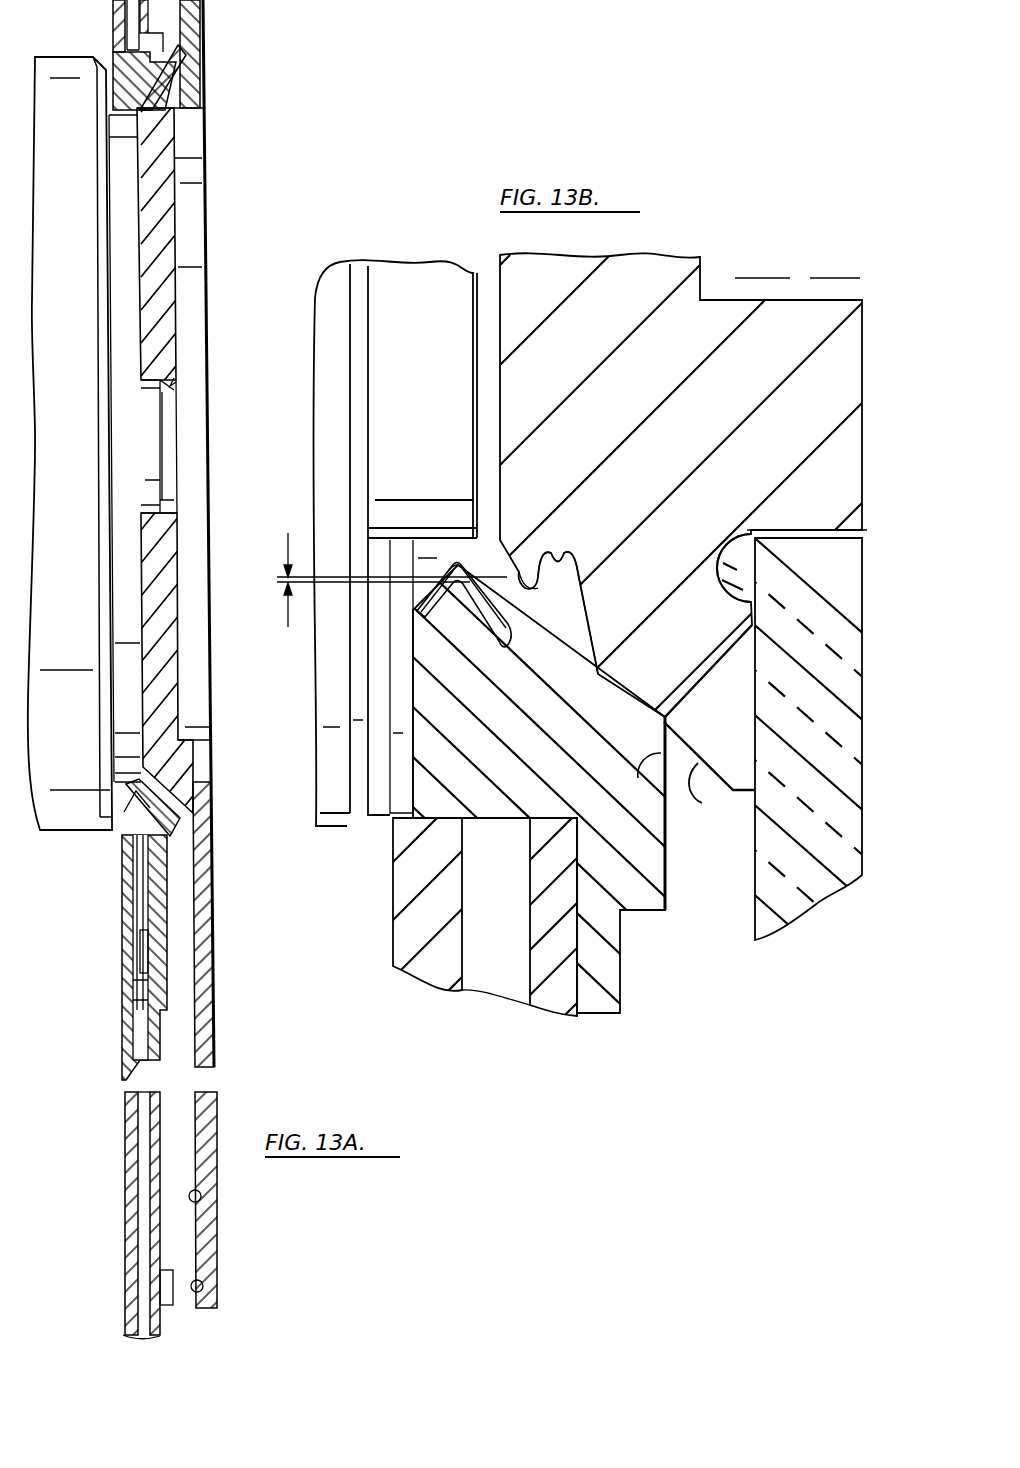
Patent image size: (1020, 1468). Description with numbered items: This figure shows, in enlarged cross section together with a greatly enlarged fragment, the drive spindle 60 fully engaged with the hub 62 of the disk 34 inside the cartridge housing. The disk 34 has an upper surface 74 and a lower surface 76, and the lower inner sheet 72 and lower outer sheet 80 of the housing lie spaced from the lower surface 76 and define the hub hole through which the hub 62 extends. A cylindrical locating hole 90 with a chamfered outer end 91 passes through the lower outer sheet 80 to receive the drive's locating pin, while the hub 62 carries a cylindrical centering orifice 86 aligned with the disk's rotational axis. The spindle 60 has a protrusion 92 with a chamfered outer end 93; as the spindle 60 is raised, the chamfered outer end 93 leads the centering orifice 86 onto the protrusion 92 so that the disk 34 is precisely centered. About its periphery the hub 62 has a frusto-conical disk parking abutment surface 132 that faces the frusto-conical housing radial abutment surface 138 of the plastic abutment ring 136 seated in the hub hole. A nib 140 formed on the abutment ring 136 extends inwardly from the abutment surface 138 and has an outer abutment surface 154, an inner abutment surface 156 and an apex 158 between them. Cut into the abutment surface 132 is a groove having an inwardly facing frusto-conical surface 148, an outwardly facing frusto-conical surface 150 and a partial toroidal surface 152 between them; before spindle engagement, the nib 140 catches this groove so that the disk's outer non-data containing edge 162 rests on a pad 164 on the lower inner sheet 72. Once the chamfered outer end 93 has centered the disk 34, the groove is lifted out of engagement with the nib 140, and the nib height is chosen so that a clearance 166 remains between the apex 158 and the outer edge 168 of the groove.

In FIG. 13A, the disk 34 is at (232, 1038).
In FIG. 13B, the disk 34 is at (812, 913).
In FIG. 13A, the spindle 60 is at (118, 316).
In FIG. 13B, the spindle 60 is at (377, 300).
In FIG. 13A, the hub 62 is at (171, 574).
In FIG. 13B, the hub 62 is at (677, 260).
In FIG. 13A, the lower inner sheet 72 is at (148, 1231).
In FIG. 13B, the lower inner sheet 72 is at (548, 1003).
In FIG. 13A, the upper surface of the disk 74 is at (218, 1062).
In FIG. 13A, the lower surface of the disk 76 is at (200, 1195).
In FIG. 13A, the lower outer sheet 80 is at (123, 1063).
In FIG. 13B, the lower outer sheet 80 is at (424, 960).
In FIG. 13A, the cylindrical centering orifice 86 is at (172, 385).
In FIG. 13A, the cylindrical locating hole 90 is at (142, 945).
In FIG. 13A, the chamfered outer end 91 is at (137, 981).
In FIG. 13A, the protrusion 92 is at (156, 470).
In FIG. 13A, the chamfered outer end 93 is at (172, 435).
In FIG. 13A, the frusto-conical disk parking abutment surface 132 is at (172, 62).
In FIG. 13B, the frusto-conical disk parking abutment surface 132 is at (695, 768).
In FIG. 13A, the plastic abutment ring 136 is at (178, 42).
In FIG. 13B, the plastic abutment ring 136 is at (440, 762).
In FIG. 13A, the frusto-conical housing radial abutment surface 138 is at (180, 86).
In FIG. 13B, the frusto-conical housing radial abutment surface 138 is at (672, 775).
In FIG. 13A, the nib 140 is at (118, 830).
In FIG. 13B, the nib 140 is at (415, 606).
In FIG. 13B, the inwardly facing frusto-conical surface 148 is at (540, 550).
In FIG. 13B, the outwardly facing frusto-conical surface 150 is at (600, 556).
In FIG. 13B, the partial toroidal surface 152 is at (578, 554).
In FIG. 13B, the outer abutment surface 154 is at (417, 604).
In FIG. 13B, the inner abutment surface 156 is at (504, 647).
In FIG. 13B, the apex 158 is at (452, 560).
In FIG. 13A, the outer non-data containing edge 162 is at (202, 1288).
In FIG. 13A, the pad 164 is at (168, 1303).
In FIG. 13B, the clearance 166 is at (384, 566).
In FIG. 13B, the outer edge of the groove 168 is at (562, 603).